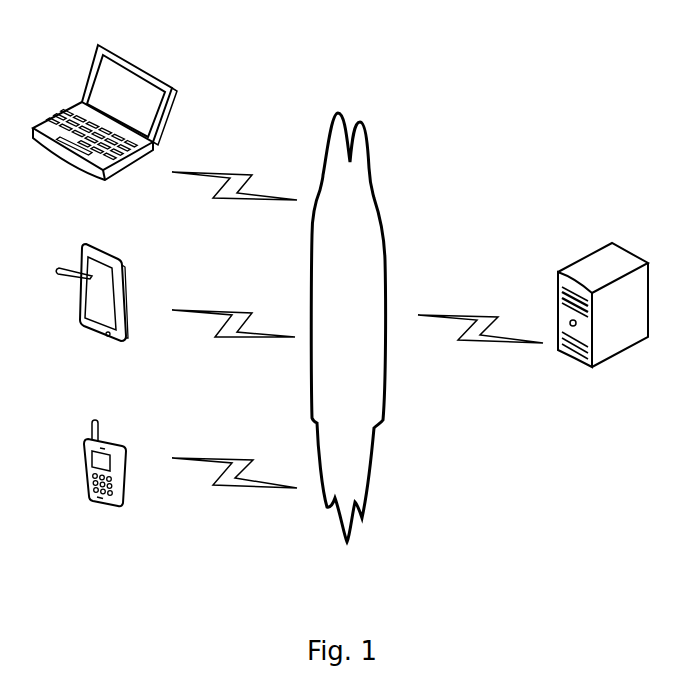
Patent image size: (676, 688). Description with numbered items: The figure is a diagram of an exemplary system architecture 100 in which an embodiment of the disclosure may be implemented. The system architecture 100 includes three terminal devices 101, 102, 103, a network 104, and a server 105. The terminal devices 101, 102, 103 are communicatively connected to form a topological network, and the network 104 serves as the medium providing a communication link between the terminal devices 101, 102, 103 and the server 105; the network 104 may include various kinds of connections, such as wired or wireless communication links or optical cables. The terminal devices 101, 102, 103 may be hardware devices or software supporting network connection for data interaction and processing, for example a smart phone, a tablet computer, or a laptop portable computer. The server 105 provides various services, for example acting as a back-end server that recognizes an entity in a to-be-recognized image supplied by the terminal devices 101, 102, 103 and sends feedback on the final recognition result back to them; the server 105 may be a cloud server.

The system architecture 100 is at (527, 37).
The terminal device 101 is at (105, 483).
The terminal device 102 is at (92, 314).
The terminal device 103 is at (105, 130).
The network 104 is at (348, 327).
The server 105 is at (603, 323).